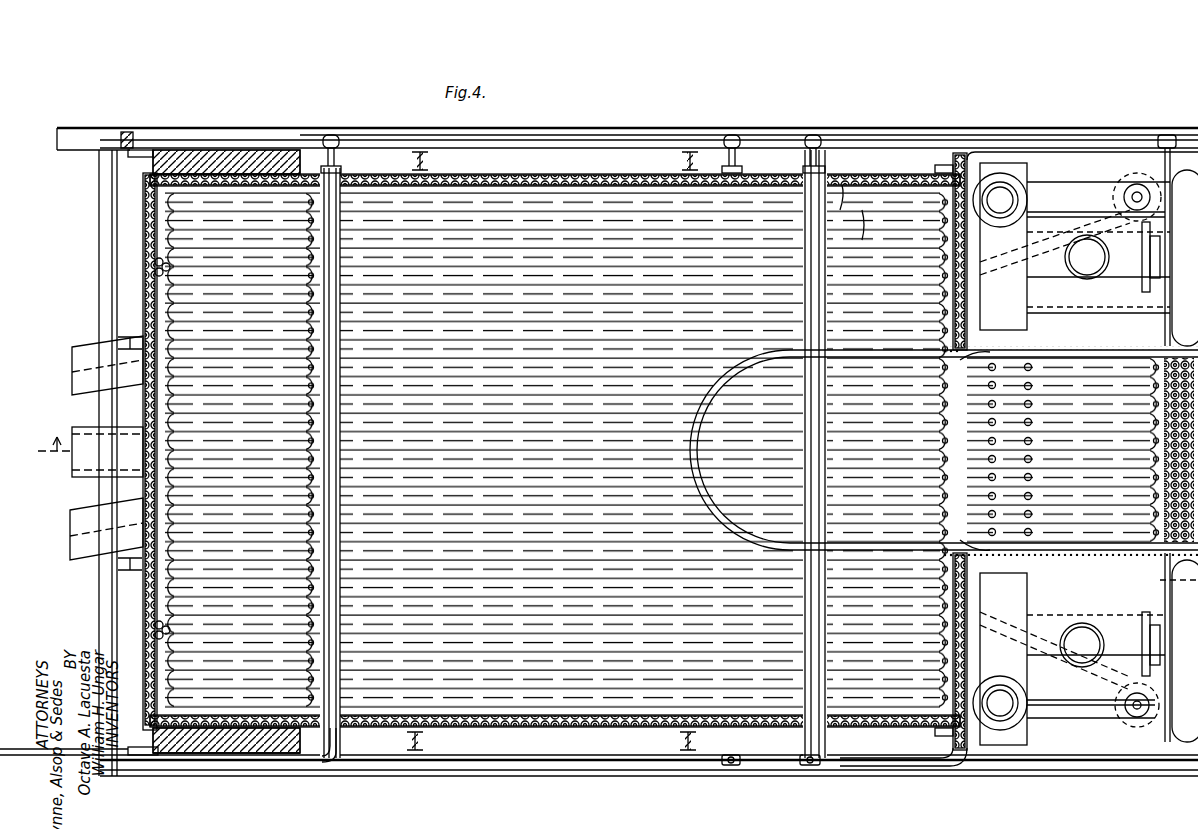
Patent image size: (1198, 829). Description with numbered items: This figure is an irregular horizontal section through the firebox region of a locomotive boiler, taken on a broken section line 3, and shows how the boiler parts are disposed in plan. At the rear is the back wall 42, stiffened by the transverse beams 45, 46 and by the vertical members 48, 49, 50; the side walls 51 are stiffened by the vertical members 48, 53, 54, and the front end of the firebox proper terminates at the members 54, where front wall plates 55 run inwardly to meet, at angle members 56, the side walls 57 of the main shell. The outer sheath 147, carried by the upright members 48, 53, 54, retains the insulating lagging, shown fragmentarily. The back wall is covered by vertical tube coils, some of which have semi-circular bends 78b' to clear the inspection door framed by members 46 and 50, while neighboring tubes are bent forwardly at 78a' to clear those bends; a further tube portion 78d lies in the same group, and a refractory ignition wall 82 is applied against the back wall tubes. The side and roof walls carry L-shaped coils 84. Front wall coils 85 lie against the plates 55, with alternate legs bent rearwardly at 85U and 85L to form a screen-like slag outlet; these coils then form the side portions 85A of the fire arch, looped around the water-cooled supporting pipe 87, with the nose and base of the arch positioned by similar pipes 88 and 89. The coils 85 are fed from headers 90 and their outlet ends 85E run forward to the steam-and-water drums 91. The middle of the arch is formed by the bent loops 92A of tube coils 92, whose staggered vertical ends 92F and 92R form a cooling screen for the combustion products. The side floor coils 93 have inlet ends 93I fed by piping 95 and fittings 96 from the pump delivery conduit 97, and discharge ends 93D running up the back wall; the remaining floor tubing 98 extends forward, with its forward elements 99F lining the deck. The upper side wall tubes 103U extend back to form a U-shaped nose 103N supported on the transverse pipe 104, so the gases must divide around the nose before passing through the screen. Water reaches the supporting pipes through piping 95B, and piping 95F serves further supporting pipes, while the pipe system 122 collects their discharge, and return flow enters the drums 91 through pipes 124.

The section line 3 is at (54, 454).
The back wall 42 is at (143, 224).
The transverse beam 45 is at (100, 607).
The transverse beam 46 is at (107, 452).
The vertical member 48 is at (138, 157).
The vertical member 49 is at (125, 337).
The vertical member 50 is at (73, 357).
The side wall 51 is at (270, 150).
The vertical member 53 is at (428, 161).
The vertical member 54 is at (940, 170).
The front wall plate 55 is at (972, 158).
The angle member 56 is at (990, 346).
The side wall 57 is at (1104, 348).
The forward bend 78a' is at (94, 334).
The semi-circular bend 78b' is at (102, 405).
The spring 78d is at (150, 492).
The refractory ignition wall 82 is at (210, 740).
The L-shaped coil 84 is at (548, 180).
The front wall coil 85 is at (910, 153).
The arch side portion 85A is at (556, 450).
The outlet end 85E is at (1043, 300).
The lower inclined leg 85L is at (862, 210).
The upper inclined leg 85U is at (842, 185).
The transverse water-cooled supporting pipe 87 is at (330, 762).
The supporting pipe 88 is at (730, 765).
The supporting pipe 89 is at (818, 765).
The header 90 is at (1027, 168).
The steam-and-water drum 91 is at (1178, 438).
The tube coil 92 is at (1016, 450).
The bent loop 92A is at (571, 450).
The front vertical portion 92F is at (1035, 490).
The rear vertical portion 92R is at (985, 505).
The side floor coil 93 is at (228, 150).
The discharge end 93D is at (150, 268).
The inlet end 93I is at (948, 354).
The piping 95 is at (1050, 215).
The piping 95B is at (572, 773).
The piping 95F is at (1179, 593).
The fitting 96 is at (1140, 718).
The pump delivery conduit 97 is at (1103, 465).
The floor tubing 98 is at (300, 463).
The fins 99F is at (1150, 408).
The U-shaped nose 103N is at (692, 400).
The upper side wall tube 103U is at (852, 357).
The transverse water-cooled pipe 104 is at (812, 758).
The pipe system 122 is at (606, 140).
The return pipe 124 is at (1084, 451).
The outer sheath 147 is at (248, 150).